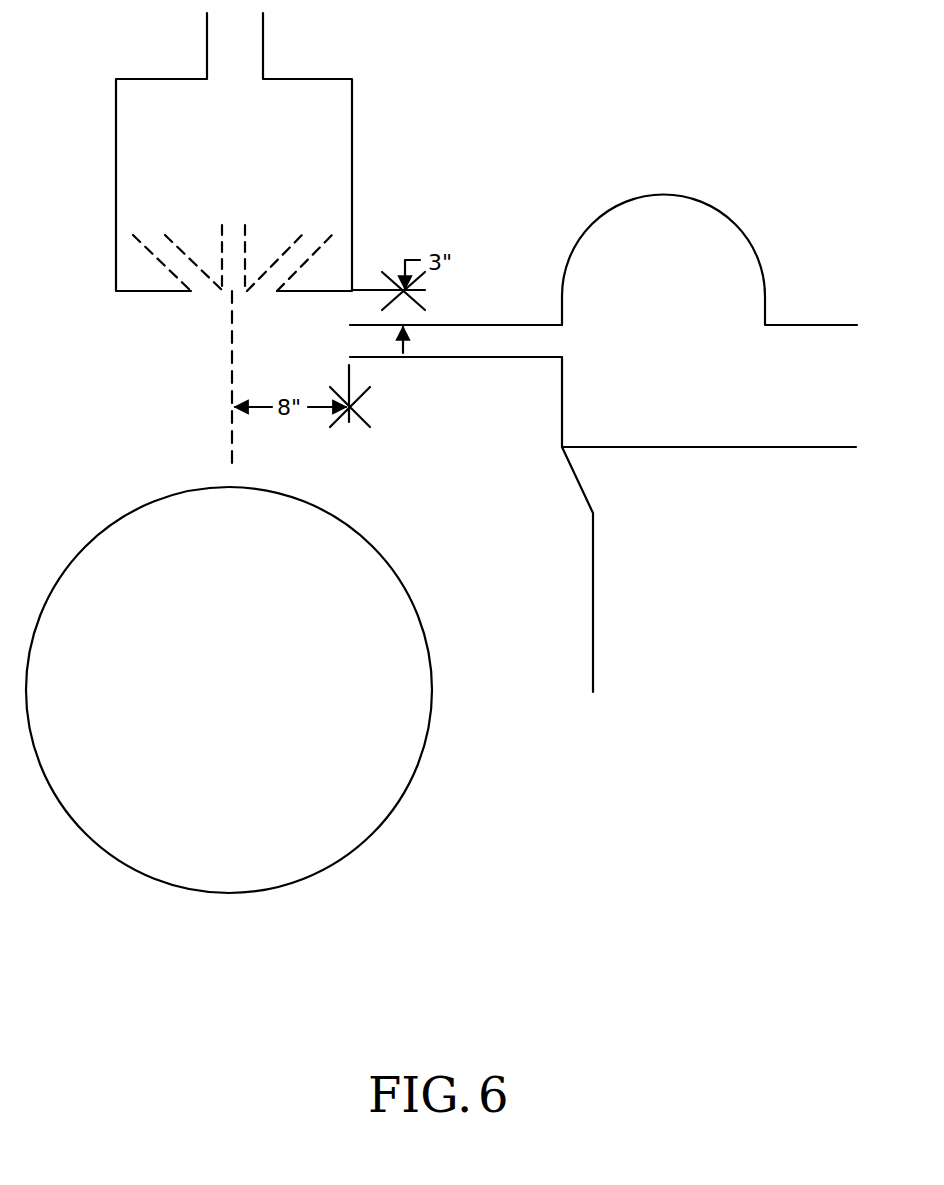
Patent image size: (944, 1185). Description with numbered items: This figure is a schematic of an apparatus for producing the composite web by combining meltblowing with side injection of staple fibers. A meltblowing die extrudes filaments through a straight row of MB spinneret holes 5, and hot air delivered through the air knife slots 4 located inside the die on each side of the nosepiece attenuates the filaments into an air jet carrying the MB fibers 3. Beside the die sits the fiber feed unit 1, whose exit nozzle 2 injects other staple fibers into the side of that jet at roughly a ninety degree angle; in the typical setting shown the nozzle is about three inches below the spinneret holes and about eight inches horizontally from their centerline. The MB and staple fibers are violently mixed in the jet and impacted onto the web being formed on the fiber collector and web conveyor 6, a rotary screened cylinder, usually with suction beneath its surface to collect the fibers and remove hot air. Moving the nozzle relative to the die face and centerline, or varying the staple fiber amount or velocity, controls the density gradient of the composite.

The fiber feed unit 1 is at (660, 447).
The exit nozzle 2 is at (455, 357).
The MB fibers 3 is at (353, 183).
The air knife slots 4 is at (207, 293).
The MB spinneret holes 5 is at (232, 293).
The fiber collector and web conveyor 6 is at (122, 520).